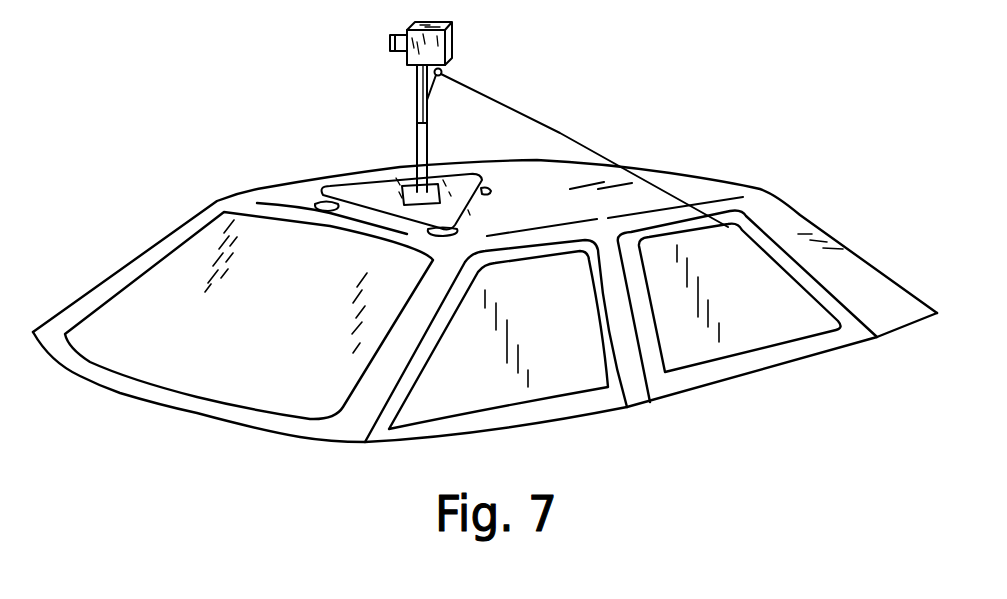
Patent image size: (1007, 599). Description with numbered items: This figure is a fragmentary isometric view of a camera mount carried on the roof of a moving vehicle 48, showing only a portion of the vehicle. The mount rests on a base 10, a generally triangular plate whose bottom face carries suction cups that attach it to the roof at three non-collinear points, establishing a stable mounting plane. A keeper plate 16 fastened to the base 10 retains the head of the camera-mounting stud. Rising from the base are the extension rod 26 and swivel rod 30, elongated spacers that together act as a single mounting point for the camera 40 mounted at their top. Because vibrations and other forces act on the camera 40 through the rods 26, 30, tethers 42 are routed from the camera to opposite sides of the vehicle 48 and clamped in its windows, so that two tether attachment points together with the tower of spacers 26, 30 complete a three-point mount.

The base 10 is at (352, 190).
The keeper plate 16 is at (482, 191).
The extension rod 26 is at (417, 128).
The swivel rod 30 is at (417, 85).
The camera 40 is at (390, 38).
The tethers 42 is at (443, 76).
The vehicle 48 is at (215, 204).